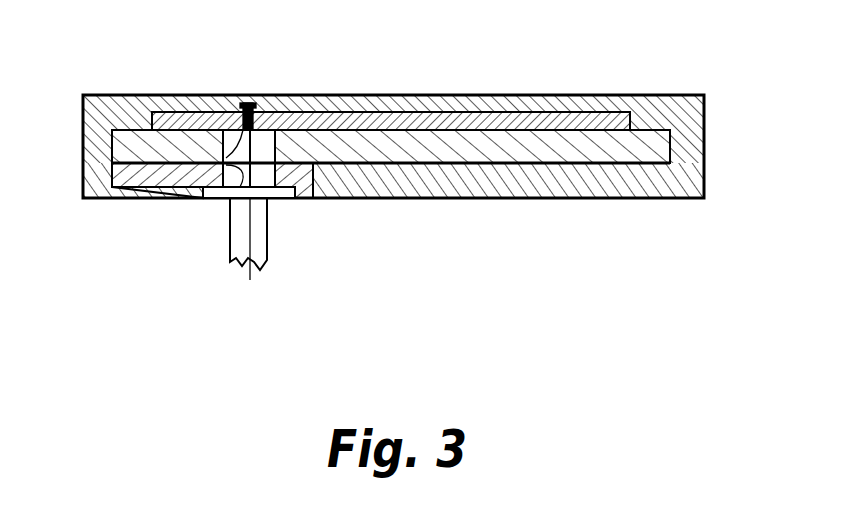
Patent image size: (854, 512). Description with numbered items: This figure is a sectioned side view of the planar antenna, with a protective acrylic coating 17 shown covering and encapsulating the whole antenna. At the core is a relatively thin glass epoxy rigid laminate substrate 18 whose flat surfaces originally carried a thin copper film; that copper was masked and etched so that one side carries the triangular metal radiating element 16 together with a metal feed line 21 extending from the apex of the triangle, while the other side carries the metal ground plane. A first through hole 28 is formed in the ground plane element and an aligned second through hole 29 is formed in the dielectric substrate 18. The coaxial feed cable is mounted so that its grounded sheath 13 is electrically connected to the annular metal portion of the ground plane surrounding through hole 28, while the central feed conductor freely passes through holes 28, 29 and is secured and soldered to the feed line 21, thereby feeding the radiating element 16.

The grounded sheath 13 is at (128, 198).
The radiating element 16 is at (465, 122).
The protective acrylic coating 17 is at (703, 173).
The substrate 18 is at (663, 137).
The feed line 21 is at (172, 112).
The first through hole 28 is at (230, 200).
The second through hole 29 is at (237, 103).